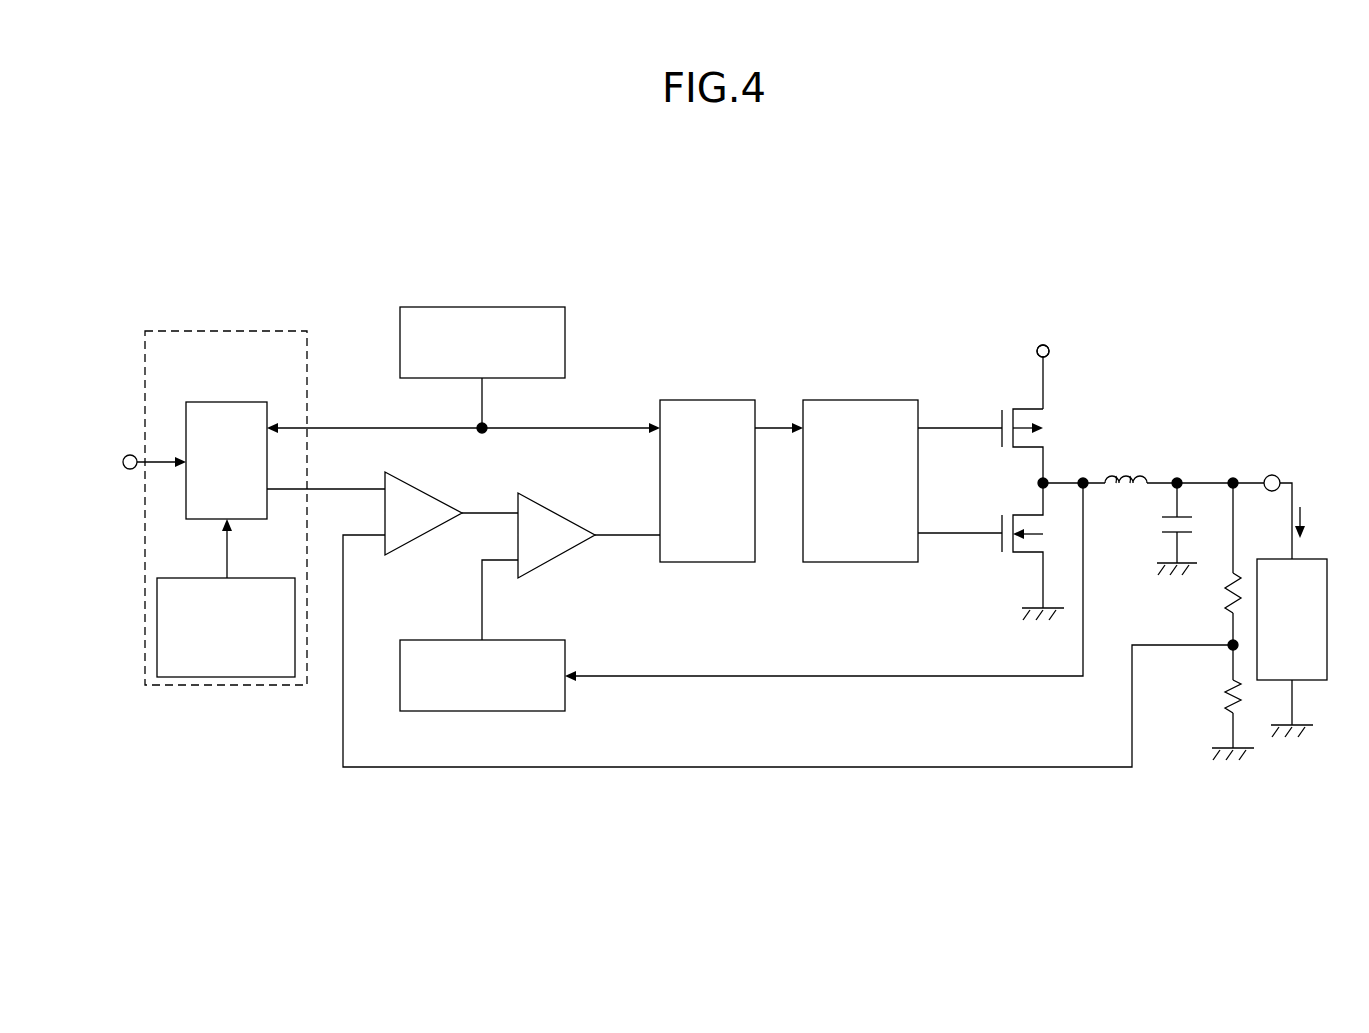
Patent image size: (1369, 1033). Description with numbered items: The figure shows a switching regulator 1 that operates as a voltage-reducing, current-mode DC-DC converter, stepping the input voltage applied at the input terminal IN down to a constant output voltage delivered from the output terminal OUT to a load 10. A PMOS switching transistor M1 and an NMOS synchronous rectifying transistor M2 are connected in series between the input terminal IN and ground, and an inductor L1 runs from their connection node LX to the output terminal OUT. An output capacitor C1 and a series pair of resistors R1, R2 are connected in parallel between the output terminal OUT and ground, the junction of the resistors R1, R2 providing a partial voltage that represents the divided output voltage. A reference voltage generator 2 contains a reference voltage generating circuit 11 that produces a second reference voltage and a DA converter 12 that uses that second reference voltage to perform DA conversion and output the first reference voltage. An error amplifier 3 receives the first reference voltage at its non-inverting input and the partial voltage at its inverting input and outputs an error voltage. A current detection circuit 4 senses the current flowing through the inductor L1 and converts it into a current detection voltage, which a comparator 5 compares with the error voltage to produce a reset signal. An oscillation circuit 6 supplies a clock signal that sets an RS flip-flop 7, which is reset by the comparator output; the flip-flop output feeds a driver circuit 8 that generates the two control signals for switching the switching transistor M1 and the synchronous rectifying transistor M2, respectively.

The switching regulator 1 is at (1131, 264).
The reference voltage generator 2 is at (233, 323).
The error amplifier 3 is at (423, 490).
The current detection circuit 4 is at (430, 640).
The comparator 5 is at (557, 514).
The oscillation circuit 6 is at (517, 307).
The RS flip-flop 7 is at (708, 400).
The driver circuit 8 is at (850, 400).
The load 10 is at (1327, 600).
The reference voltage generating circuit 11 is at (202, 578).
The DA converter 12 is at (227, 402).
The switching transistor M1 is at (1022, 435).
The synchronous rectifying transistor M2 is at (1022, 545).
The inductor L1 is at (1126, 463).
The output capacitor C1 is at (1161, 529).
The resistor R1 is at (1216, 564).
The resistor R2 is at (1222, 702).
The input terminal IN is at (1052, 357).
The output terminal OUT is at (1272, 472).
The connection node LX is at (1050, 475).